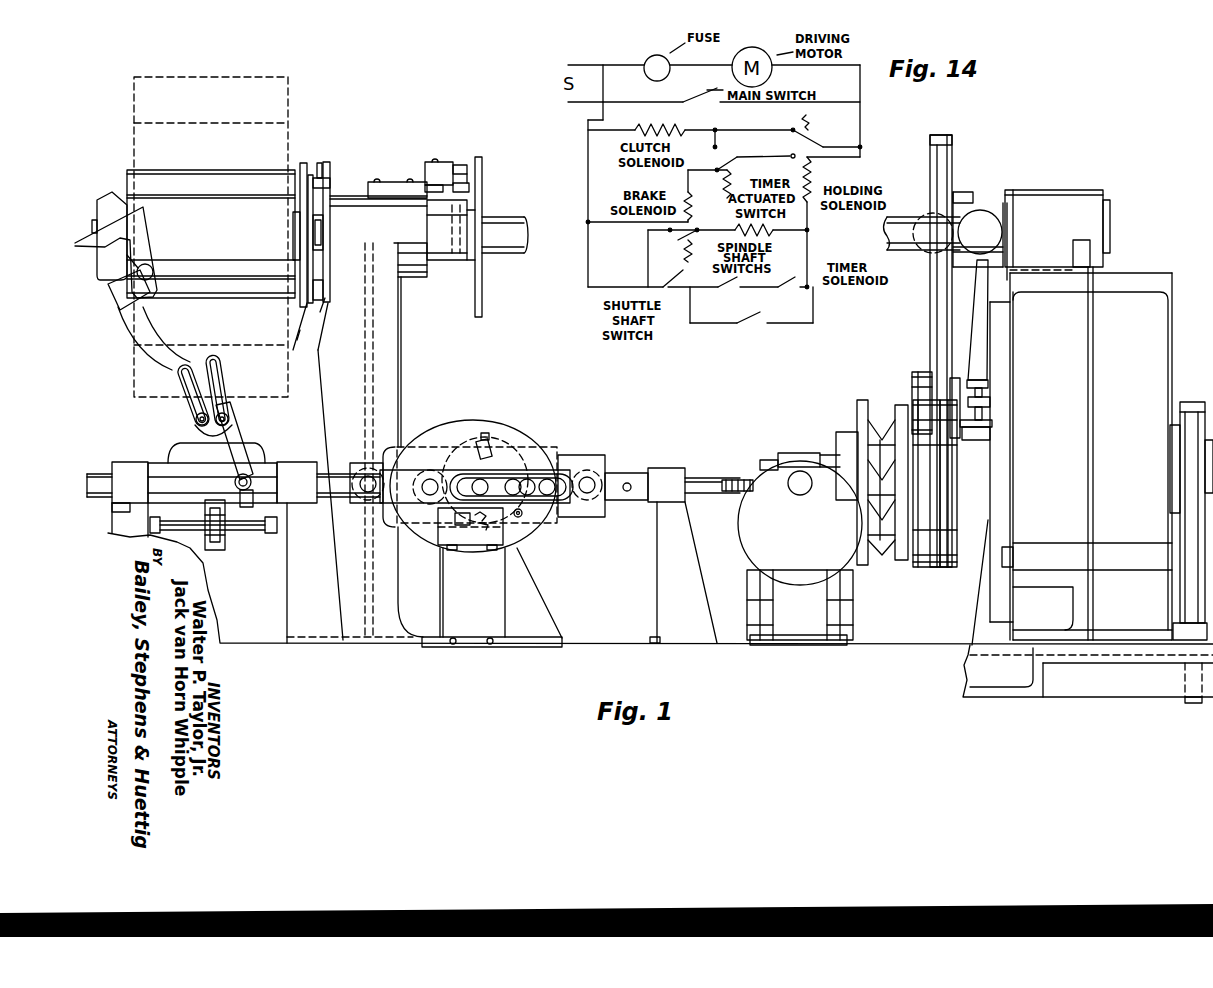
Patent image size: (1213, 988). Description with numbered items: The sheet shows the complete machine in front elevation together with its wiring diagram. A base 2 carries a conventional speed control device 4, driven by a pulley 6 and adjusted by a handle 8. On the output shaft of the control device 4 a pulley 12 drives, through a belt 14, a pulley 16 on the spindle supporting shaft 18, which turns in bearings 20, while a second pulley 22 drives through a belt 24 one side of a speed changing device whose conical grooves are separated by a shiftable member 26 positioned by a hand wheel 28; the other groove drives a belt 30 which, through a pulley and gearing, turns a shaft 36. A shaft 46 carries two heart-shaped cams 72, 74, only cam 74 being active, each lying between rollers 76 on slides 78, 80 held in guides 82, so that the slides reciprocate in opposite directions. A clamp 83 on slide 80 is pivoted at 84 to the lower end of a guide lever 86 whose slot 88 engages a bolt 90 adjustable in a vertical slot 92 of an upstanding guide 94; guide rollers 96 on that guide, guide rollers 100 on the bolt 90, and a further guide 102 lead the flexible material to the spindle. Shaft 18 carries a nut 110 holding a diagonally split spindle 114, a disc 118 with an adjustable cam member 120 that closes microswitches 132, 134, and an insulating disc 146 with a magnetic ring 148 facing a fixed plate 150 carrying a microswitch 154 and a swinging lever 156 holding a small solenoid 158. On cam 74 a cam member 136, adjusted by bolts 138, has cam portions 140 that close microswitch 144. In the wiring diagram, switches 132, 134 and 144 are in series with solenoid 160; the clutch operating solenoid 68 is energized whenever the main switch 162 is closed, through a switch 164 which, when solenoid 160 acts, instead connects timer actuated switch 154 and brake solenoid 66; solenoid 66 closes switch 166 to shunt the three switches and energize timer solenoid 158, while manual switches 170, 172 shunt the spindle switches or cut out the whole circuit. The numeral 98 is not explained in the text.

In FIG. 1, the base 2 is at (1087, 692).
In FIG. 1, the speed control device 4 is at (1157, 350).
In FIG. 1, the pulley 6 is at (1200, 402).
In FIG. 1, the handle 8 is at (973, 220).
In FIG. 1, the pulley 12 is at (952, 565).
In FIG. 1, the belt 14 is at (938, 348).
In FIG. 1, the pulley 16 is at (955, 147).
In FIG. 1, the spindle supporting shaft 18 is at (500, 243).
In FIG. 1, the bearings 20 is at (345, 215).
In FIG. 1, the second pulley 22 is at (910, 375).
In FIG. 1, the belt 24 is at (923, 565).
In FIG. 1, the shiftable member 26 is at (895, 405).
In FIG. 1, the hand wheel 28 is at (788, 545).
In FIG. 1, the belt 30 is at (882, 525).
In FIG. 1, the shaft 36 is at (737, 478).
In FIG. 1, the shaft 46 is at (514, 480).
In FIG. 1, the heart-shaped cam 72 is at (440, 432).
In FIG. 1, the heart-shaped cam 74 is at (510, 433).
In FIG. 1, the rollers 76 is at (367, 473).
In FIG. 1, the slide 78 is at (93, 495).
In FIG. 1, the slide 80 is at (333, 490).
In FIG. 1, the guides 82 is at (120, 463).
In FIG. 1, the clamp 83 is at (248, 507).
In FIG. 1, the pivot 84 is at (251, 474).
In FIG. 1, the guide lever 86 is at (147, 343).
In FIG. 1, the slot 88 is at (197, 357).
In FIG. 1, the bolt 90 is at (212, 432).
In FIG. 1, the vertical slot 92 is at (221, 377).
In FIG. 1, the guide 94 is at (240, 403).
In FIG. 1, the guide rollers 96 is at (153, 270).
In FIG. 1, the wire guide 98 is at (140, 217).
In FIG. 1, the guide rollers 100 is at (194, 420).
In FIG. 1, the guide 102 is at (213, 548).
In FIG. 1, the nut 110 is at (105, 203).
In FIG. 1, the diagonally split spindle 114 is at (268, 187).
In FIG. 1, the disc 118 is at (482, 187).
In FIG. 1, the cam member 120 is at (470, 178).
In FIG. 1, the microswitch 132 is at (435, 173).
In FIG. 14, the microswitch 132 is at (727, 290).
In FIG. 1, the microswitch 134 is at (443, 188).
In FIG. 14, the microswitch 134 is at (782, 290).
In FIG. 1, the cam member 136 is at (482, 482).
In FIG. 1, the bolts 138 is at (521, 518).
In FIG. 1, the cam portions 140 is at (483, 436).
In FIG. 1, the microswitch 144 is at (463, 537).
In FIG. 14, the microswitch 144 is at (653, 258).
In FIG. 1, the disc 146 is at (304, 340).
In FIG. 1, the ring 148 is at (310, 200).
In FIG. 1, the fixed plate 150 is at (327, 165).
In FIG. 1, the microswitch 154 is at (322, 175).
In FIG. 14, the microswitch 154 is at (740, 159).
In FIG. 1, the lever 156 is at (321, 314).
In FIG. 14, the solenoid 158 is at (773, 230).
In FIG. 14, the solenoid 160 is at (851, 218).
In FIG. 14, the main switch 162 is at (731, 84).
In FIG. 14, the switch 164 is at (813, 137).
In FIG. 14, the switch 166 is at (727, 223).
In FIG. 14, the switch 170 is at (745, 322).
In FIG. 14, the switch 172 is at (831, 223).
In FIG. 14, the brake solenoid 66 is at (692, 205).
In FIG. 14, the clutch operating solenoid 68 is at (690, 126).